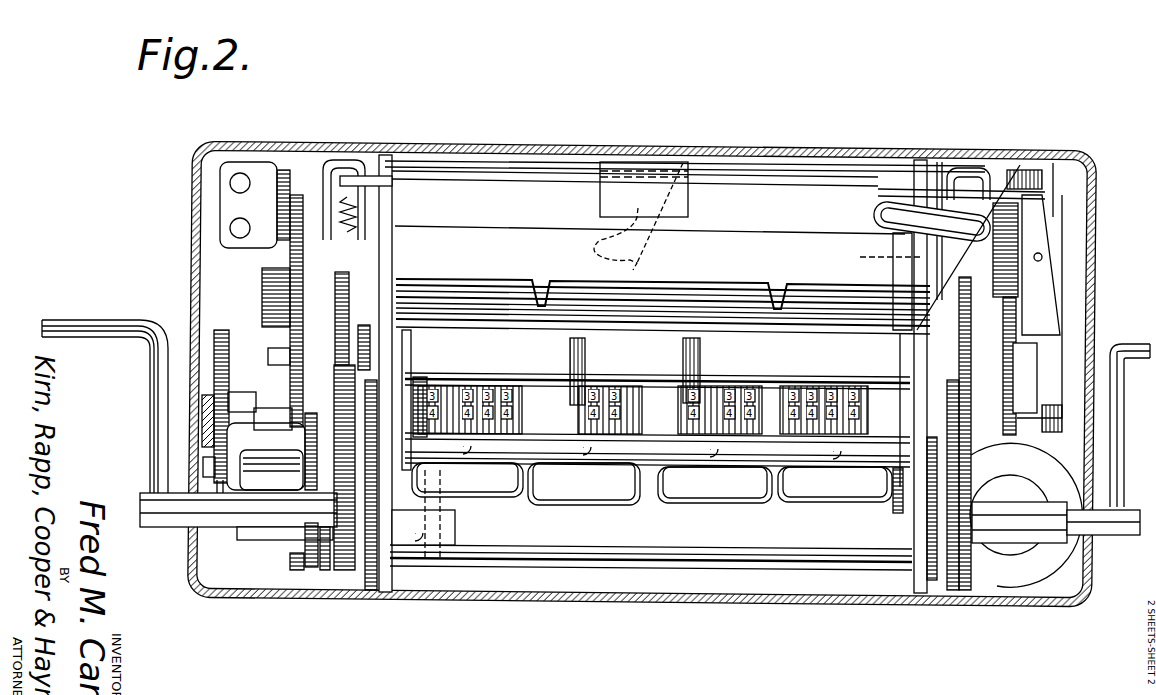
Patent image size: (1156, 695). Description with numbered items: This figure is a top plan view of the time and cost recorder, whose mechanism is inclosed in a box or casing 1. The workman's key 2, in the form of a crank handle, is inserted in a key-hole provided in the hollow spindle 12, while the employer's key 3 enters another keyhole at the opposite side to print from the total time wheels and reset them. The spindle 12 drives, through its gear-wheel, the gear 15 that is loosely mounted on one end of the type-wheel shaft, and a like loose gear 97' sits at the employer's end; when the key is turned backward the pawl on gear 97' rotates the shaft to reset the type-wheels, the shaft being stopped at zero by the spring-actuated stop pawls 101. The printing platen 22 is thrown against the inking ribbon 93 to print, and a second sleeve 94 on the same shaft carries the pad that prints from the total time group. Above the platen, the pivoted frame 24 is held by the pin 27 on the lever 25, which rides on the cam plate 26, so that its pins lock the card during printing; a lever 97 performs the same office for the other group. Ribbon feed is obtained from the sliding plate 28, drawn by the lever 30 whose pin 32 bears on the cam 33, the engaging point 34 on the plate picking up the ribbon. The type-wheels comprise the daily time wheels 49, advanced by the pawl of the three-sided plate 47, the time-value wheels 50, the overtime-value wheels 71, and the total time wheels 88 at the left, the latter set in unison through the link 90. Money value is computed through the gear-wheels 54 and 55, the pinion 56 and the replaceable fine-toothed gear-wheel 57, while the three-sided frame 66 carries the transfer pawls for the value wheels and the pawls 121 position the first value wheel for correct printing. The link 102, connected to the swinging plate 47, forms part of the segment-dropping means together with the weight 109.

The box or casing 1 is at (762, 605).
The key 2 is at (1118, 448).
The key 3 is at (148, 405).
The hollow spindle 12 is at (1016, 520).
The gear 15 is at (959, 318).
The printing platen 22 is at (690, 282).
The frame 24 is at (540, 232).
The lever 25 is at (966, 170).
The cam plate 26 is at (1008, 208).
The pin 27 is at (930, 255).
The sliding plate 28 is at (534, 161).
The lever 30 is at (1058, 348).
The pin 32 is at (1043, 256).
The cam 33 is at (1030, 322).
The engaging point 34 is at (690, 170).
The plate 47 is at (487, 497).
The time type-wheels 49 is at (842, 386).
The type-wheels 50 is at (740, 386).
The gear-wheel 54 is at (312, 568).
The gear-wheel 55 is at (298, 497).
The pinion 56 is at (205, 463).
The gear-wheel 57 is at (213, 340).
The three-sided frame 66 is at (720, 503).
The overtime-value wheels 71 is at (615, 386).
The time type-wheels 88 is at (478, 386).
The link 90 is at (280, 352).
The inking ribbon 93 is at (812, 182).
The sleeve 94 is at (268, 292).
The lever 97 is at (357, 168).
The gear 97' is at (393, 420).
The stop pawls 101 is at (420, 362).
The link 102 is at (906, 514).
The weight 109 is at (1040, 567).
The pawls 121 is at (440, 352).